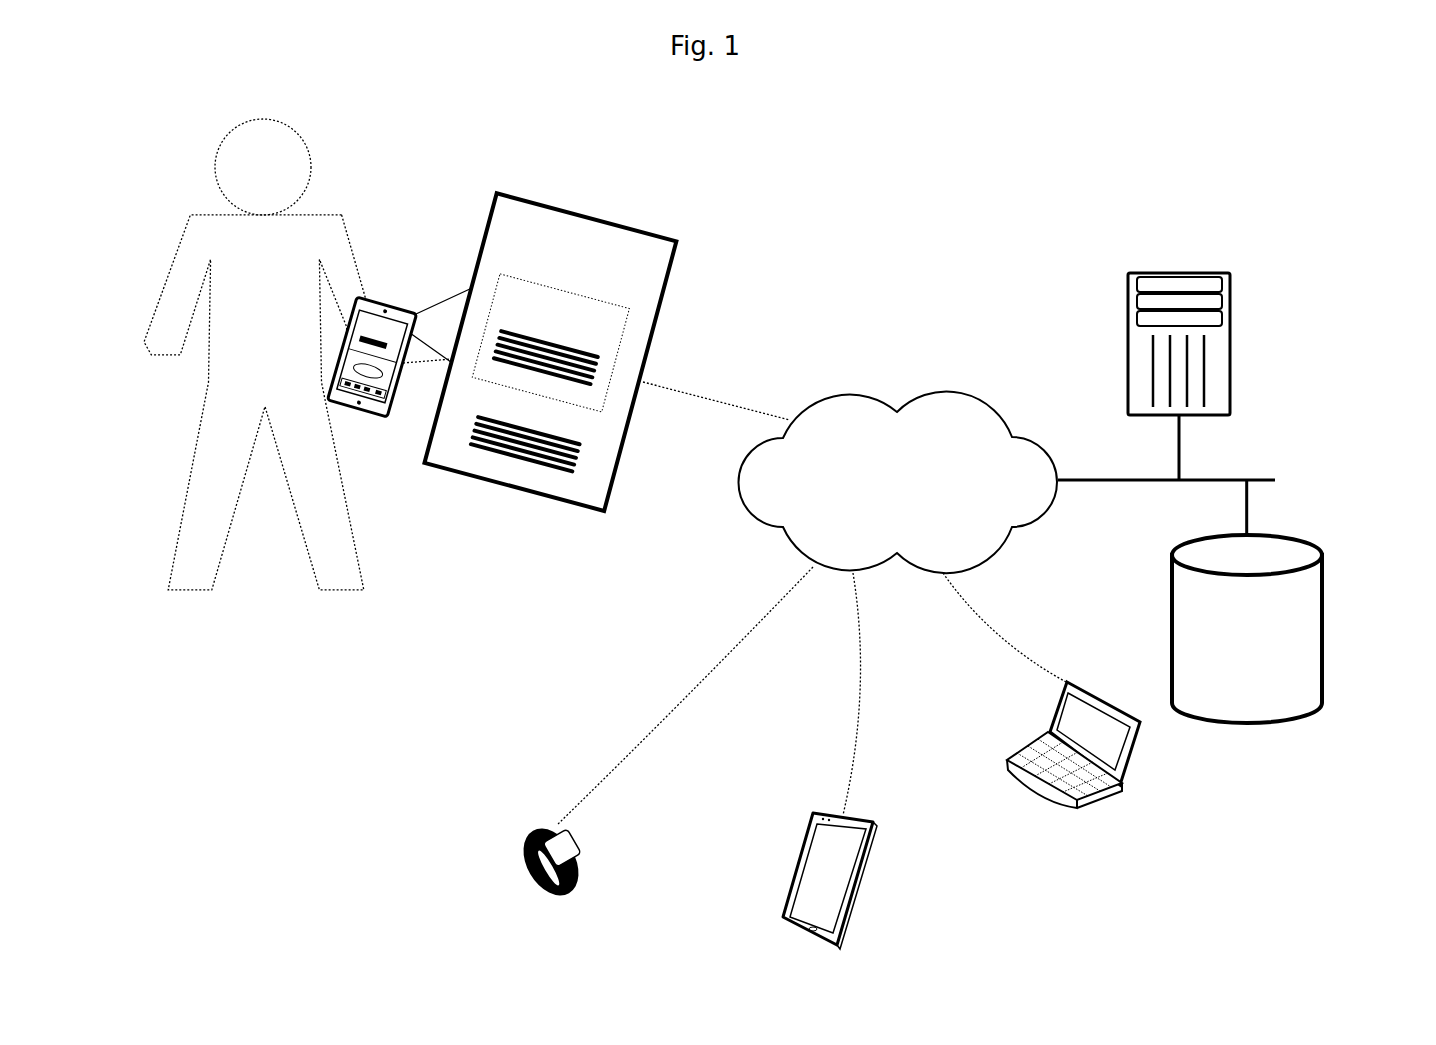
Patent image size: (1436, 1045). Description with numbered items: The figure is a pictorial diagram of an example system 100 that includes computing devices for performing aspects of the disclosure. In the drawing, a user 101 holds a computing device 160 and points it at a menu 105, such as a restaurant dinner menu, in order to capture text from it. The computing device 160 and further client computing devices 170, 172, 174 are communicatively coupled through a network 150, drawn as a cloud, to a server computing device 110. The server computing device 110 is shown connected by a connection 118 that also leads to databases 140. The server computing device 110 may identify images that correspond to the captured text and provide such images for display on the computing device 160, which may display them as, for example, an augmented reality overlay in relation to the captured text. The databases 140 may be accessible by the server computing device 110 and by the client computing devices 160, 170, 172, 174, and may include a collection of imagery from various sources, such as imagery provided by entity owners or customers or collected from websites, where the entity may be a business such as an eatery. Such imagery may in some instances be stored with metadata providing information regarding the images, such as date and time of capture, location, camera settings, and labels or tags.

The system 100 is at (1038, 144).
The user 101 is at (307, 138).
The menu 105 is at (532, 200).
The server computing device 110 is at (1232, 348).
The network connection 118 is at (1238, 480).
The databases 140 is at (1323, 647).
The network 150 is at (853, 391).
The computing device 160 is at (395, 303).
The client computing device 170 is at (517, 900).
The client computing device 172 is at (780, 912).
The client computing device 174 is at (1010, 758).